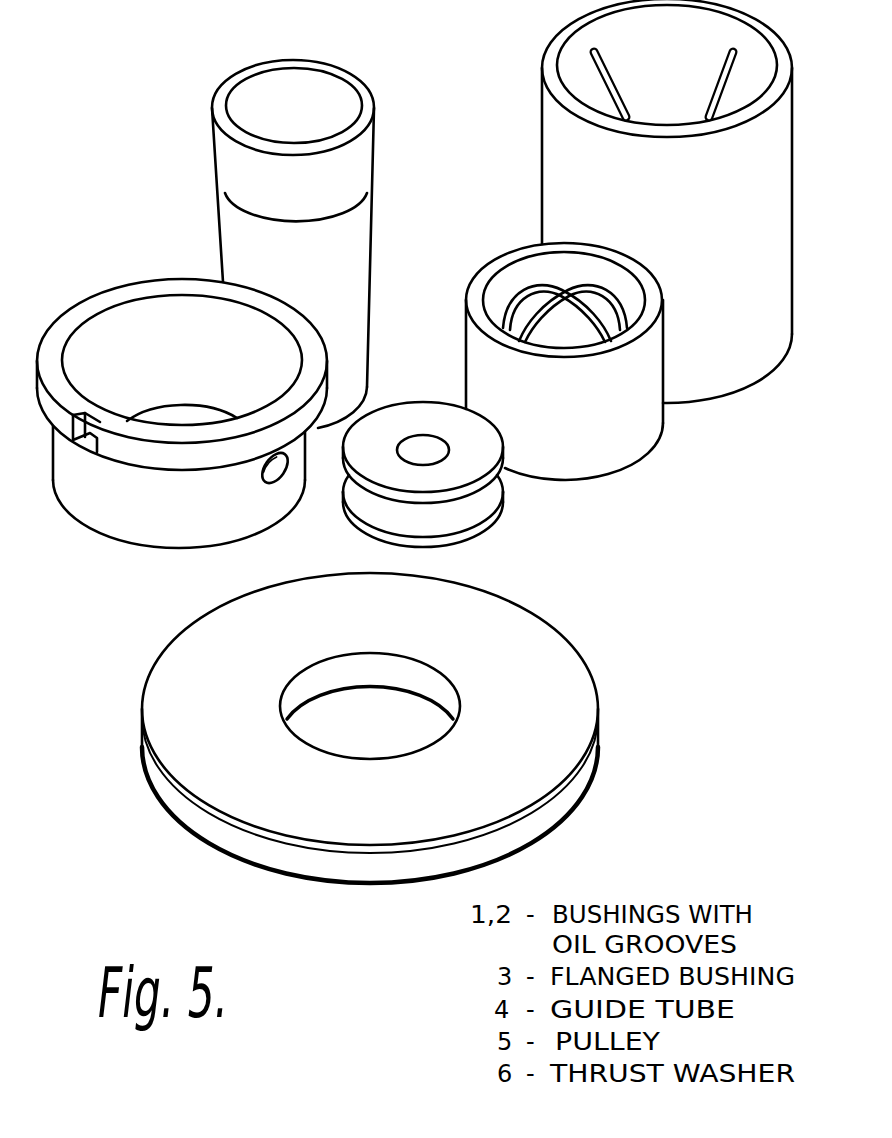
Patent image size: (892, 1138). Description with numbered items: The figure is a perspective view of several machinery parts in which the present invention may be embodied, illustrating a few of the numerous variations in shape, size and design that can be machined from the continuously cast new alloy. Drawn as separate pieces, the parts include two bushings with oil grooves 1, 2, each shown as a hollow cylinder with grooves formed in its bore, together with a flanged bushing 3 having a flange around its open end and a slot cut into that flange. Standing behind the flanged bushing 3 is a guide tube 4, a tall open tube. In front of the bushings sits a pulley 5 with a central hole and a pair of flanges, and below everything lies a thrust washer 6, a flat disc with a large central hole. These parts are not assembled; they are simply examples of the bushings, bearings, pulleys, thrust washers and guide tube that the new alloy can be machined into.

The bushing with oil grooves 1 is at (575, 179).
The bushing with oil grooves 2 is at (620, 448).
The flanged bushing 3 is at (143, 513).
The guide tube 4 is at (253, 247).
The pulley 5 is at (468, 513).
The thrust washer 6 is at (562, 668).